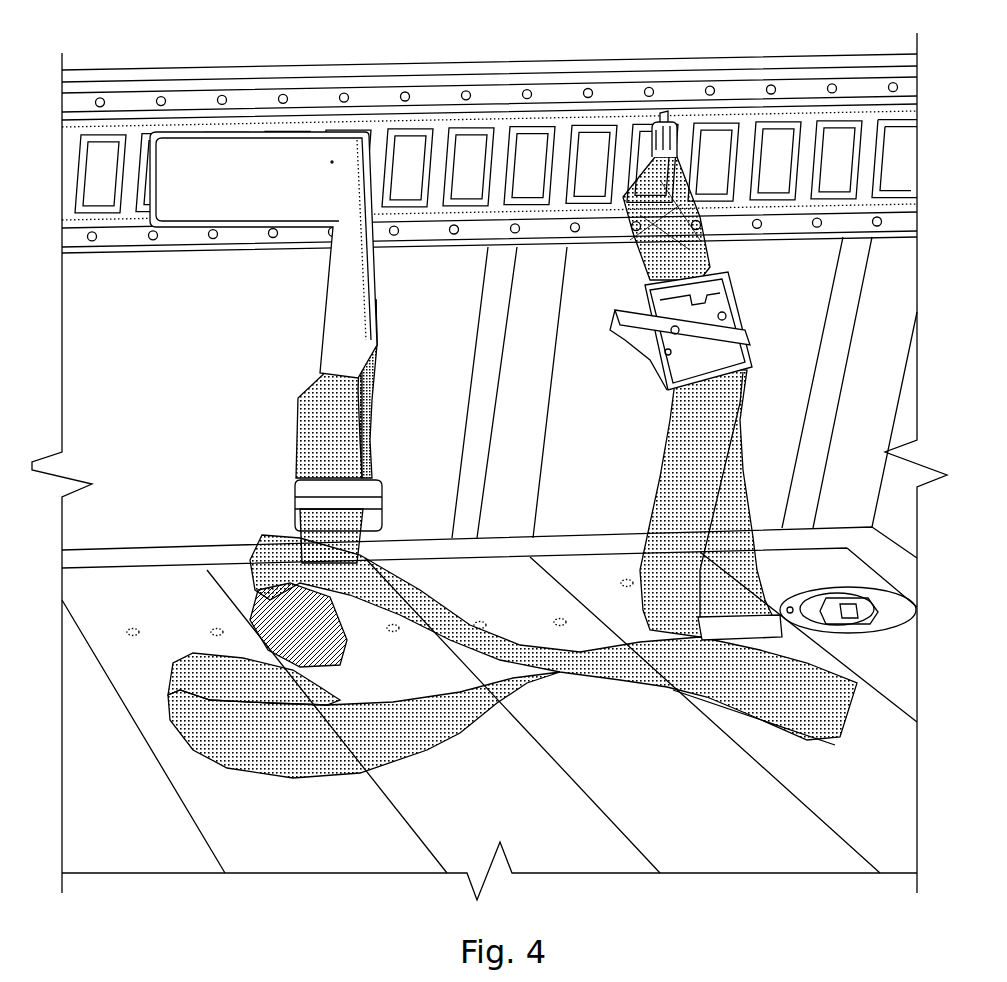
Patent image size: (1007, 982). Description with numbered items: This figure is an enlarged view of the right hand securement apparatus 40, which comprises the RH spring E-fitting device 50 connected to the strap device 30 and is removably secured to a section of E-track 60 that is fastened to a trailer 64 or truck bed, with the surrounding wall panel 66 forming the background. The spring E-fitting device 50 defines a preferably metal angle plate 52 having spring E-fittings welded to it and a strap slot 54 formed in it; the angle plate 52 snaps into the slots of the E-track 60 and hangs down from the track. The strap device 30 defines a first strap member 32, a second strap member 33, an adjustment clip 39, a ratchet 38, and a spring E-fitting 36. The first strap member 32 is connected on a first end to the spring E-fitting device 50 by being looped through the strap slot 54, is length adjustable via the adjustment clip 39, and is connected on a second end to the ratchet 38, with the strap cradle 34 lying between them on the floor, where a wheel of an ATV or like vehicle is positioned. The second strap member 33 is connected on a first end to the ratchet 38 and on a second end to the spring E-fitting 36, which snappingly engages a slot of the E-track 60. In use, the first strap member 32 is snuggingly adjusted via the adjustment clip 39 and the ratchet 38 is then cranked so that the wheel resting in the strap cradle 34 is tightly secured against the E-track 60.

The strap device 30 is at (512, 687).
The first strap member 32 is at (417, 382).
The second strap member 33 is at (682, 233).
The strap cradle 34 is at (328, 705).
The spring E-fitting 36 is at (670, 118).
The ratchet 38 is at (647, 362).
The adjustment clip 39 is at (292, 500).
The right hand securement apparatus 40 is at (282, 378).
The RH spring E-fitting device 50 is at (263, 203).
The angle plate 52 is at (332, 162).
The strap slot 54 is at (375, 337).
The E-track 60 is at (520, 120).
The trailer 64 is at (633, 780).
The wall panel 66 is at (508, 500).